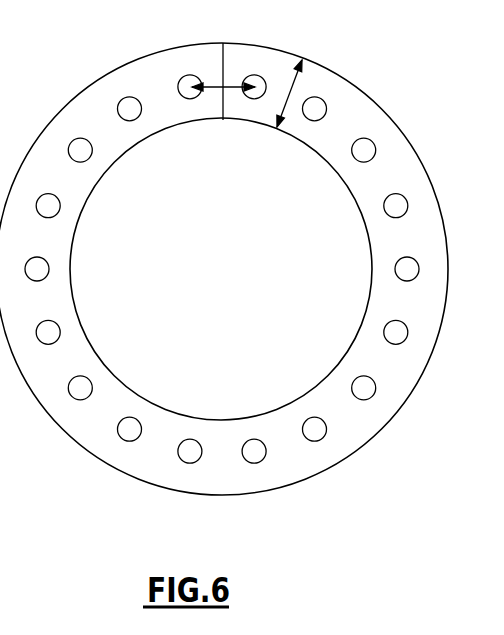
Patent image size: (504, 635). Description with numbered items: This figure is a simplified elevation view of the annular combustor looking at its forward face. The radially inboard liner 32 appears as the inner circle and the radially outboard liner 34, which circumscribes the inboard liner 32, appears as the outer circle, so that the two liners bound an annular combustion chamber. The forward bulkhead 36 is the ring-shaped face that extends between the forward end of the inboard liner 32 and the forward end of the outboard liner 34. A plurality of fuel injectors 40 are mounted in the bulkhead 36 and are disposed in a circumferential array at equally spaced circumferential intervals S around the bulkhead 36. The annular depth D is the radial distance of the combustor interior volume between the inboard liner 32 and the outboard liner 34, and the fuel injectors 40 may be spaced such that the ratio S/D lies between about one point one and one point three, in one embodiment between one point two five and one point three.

The radially inboard liner 32 is at (365, 227).
The radially outboard liner 34 is at (414, 140).
The forward bulkhead 36 is at (237, 255).
The fuel injectors 40 is at (257, 75).
The circumferential interval S is at (218, 82).
The annular depth D is at (298, 90).